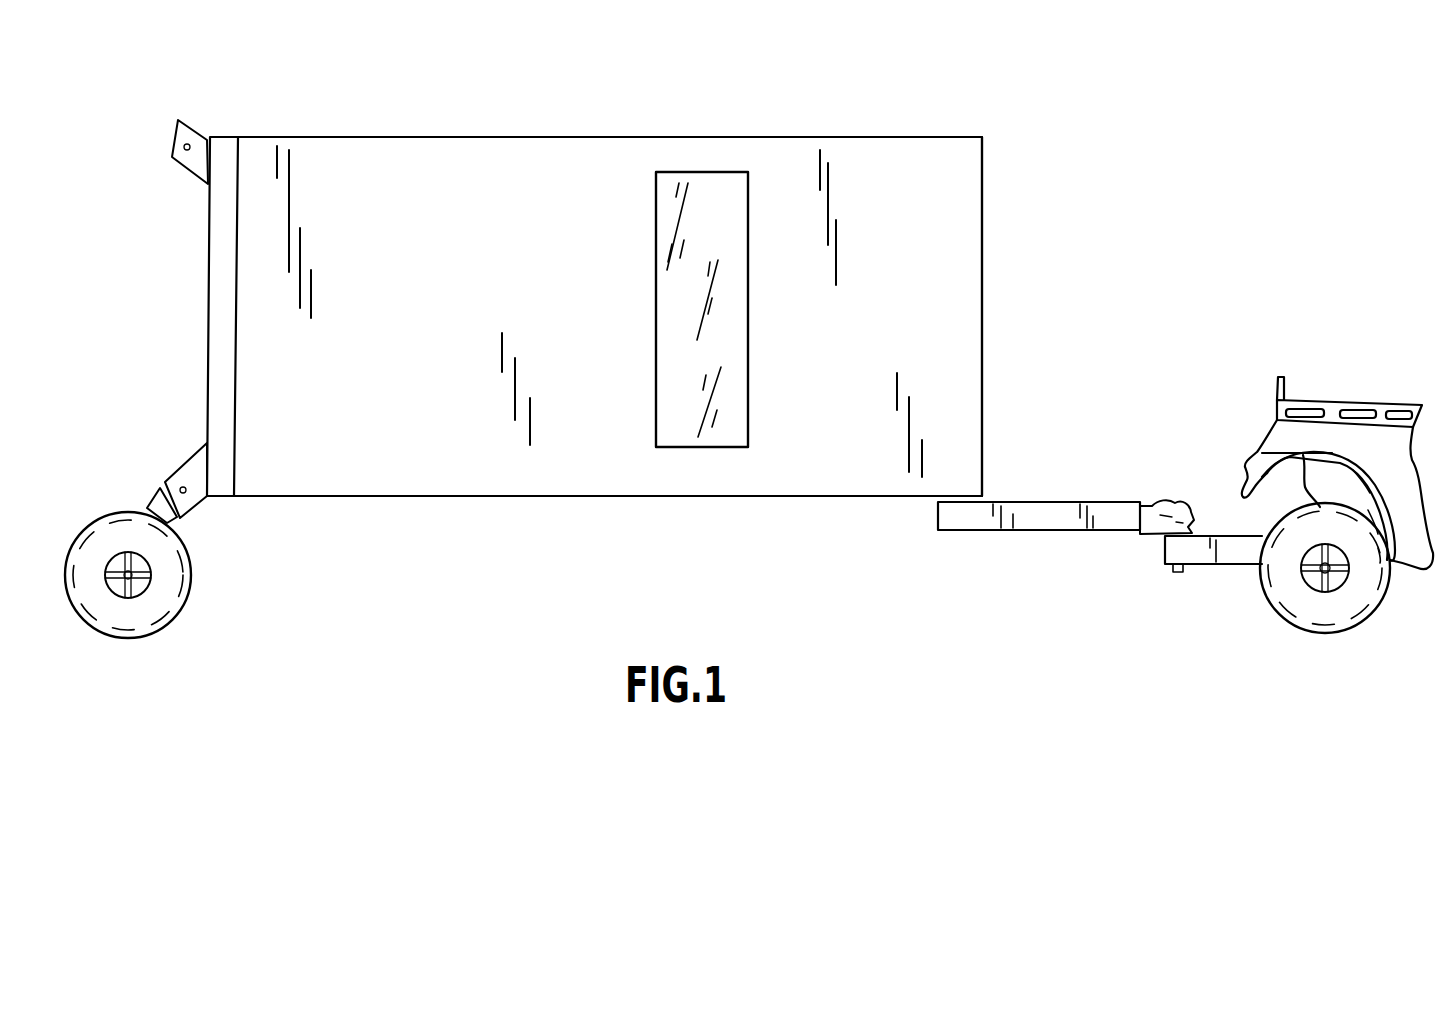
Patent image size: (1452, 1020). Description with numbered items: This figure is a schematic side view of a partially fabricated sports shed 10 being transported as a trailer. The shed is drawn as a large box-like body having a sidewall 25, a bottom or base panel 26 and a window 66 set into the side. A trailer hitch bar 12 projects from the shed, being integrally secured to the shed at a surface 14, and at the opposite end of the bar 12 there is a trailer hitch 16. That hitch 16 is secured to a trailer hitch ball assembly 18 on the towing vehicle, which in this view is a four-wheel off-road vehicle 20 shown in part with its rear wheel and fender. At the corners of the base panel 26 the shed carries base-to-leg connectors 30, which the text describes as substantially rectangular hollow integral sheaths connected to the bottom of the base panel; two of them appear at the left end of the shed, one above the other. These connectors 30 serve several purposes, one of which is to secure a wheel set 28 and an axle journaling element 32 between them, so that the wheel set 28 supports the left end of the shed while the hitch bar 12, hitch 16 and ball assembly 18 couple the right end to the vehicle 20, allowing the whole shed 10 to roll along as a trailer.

The partially fabricated sports shed 10 is at (463, 153).
The trailer hitch bar 12 is at (1037, 515).
The surface 14 is at (958, 494).
The trailer hitch 16 is at (1170, 501).
The trailer hitch ball assembly 18 is at (1185, 552).
The four-wheel off-road vehicle 20 is at (1383, 348).
The sidewall 25 is at (413, 498).
The base panel 26 is at (210, 297).
The wheel set 28 is at (192, 592).
The base-to-leg connector 30 is at (197, 138).
The axle journaling element 32 is at (162, 507).
The window 66 is at (670, 428).